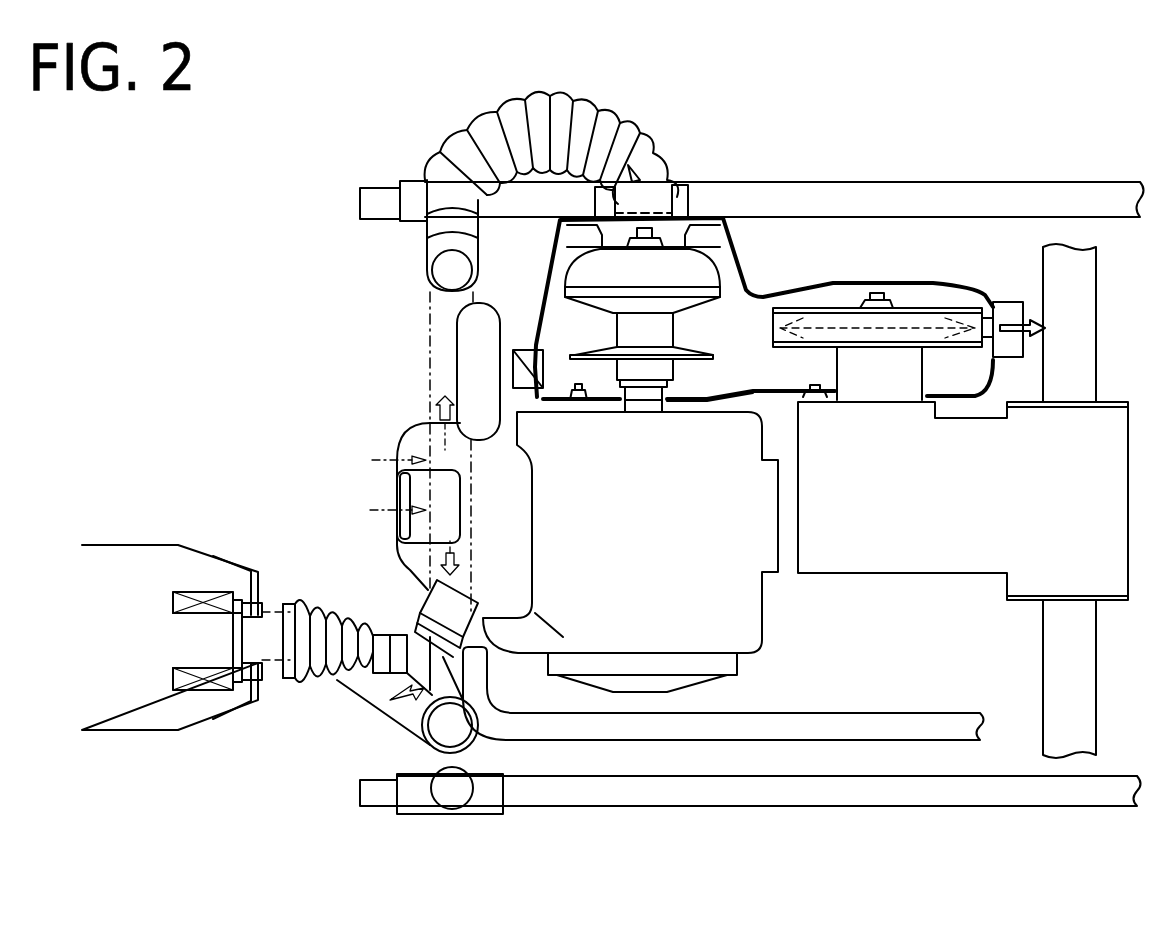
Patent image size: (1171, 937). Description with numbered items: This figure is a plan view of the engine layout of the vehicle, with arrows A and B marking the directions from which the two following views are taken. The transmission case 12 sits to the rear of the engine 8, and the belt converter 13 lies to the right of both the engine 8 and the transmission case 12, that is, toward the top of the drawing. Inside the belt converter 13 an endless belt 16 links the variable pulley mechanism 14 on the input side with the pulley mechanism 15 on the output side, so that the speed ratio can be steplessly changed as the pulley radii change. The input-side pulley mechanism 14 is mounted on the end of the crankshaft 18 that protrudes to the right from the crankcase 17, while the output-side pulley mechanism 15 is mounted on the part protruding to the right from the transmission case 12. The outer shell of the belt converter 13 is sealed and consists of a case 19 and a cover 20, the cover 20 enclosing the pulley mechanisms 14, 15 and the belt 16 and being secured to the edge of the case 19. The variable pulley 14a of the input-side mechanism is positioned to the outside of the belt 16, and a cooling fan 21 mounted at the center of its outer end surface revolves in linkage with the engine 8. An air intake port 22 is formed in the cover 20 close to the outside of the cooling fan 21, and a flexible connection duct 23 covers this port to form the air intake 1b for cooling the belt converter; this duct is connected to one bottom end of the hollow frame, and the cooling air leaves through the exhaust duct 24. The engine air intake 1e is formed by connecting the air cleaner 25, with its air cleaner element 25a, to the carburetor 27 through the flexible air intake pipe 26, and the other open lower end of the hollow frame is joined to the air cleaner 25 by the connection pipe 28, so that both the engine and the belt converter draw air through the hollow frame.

The engine 8 is at (767, 612).
The transmission case 12 is at (923, 537).
The belt converter 13 is at (767, 272).
The variable pulley mechanism 14 is at (750, 280).
The variable pulley 14a is at (727, 277).
The pulley mechanism 15 is at (915, 317).
The endless belt 16 is at (745, 333).
The crankcase 17 is at (667, 427).
The crankshaft 18 is at (638, 403).
The case 19 is at (572, 405).
The cover 20 is at (548, 285).
The cooling fan 21 is at (700, 233).
The air intake port 22 is at (648, 195).
The flexible connection duct 23 is at (508, 110).
The exhaust duct 24 is at (1005, 302).
The air cleaner 25 is at (143, 733).
The air cleaner element 25a is at (193, 595).
The air intake pipe 26 is at (293, 597).
The carburetor 27 is at (413, 598).
The connection pipe 28 is at (367, 692).
The air intake 1b is at (403, 134).
The air intake 1e is at (291, 708).
The arrow A is at (705, 828).
The arrow B is at (706, 128).